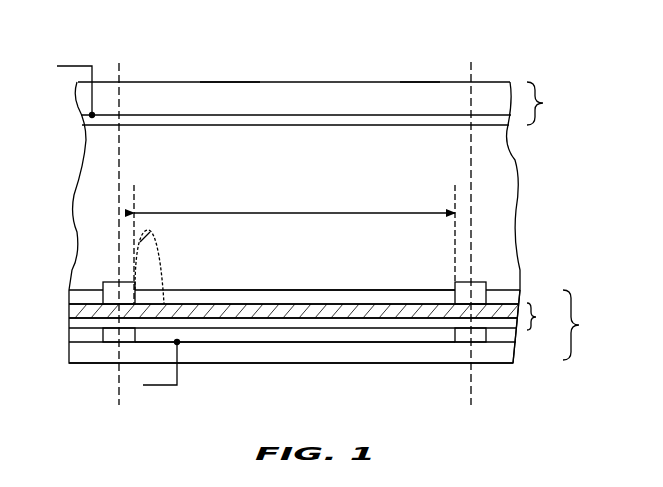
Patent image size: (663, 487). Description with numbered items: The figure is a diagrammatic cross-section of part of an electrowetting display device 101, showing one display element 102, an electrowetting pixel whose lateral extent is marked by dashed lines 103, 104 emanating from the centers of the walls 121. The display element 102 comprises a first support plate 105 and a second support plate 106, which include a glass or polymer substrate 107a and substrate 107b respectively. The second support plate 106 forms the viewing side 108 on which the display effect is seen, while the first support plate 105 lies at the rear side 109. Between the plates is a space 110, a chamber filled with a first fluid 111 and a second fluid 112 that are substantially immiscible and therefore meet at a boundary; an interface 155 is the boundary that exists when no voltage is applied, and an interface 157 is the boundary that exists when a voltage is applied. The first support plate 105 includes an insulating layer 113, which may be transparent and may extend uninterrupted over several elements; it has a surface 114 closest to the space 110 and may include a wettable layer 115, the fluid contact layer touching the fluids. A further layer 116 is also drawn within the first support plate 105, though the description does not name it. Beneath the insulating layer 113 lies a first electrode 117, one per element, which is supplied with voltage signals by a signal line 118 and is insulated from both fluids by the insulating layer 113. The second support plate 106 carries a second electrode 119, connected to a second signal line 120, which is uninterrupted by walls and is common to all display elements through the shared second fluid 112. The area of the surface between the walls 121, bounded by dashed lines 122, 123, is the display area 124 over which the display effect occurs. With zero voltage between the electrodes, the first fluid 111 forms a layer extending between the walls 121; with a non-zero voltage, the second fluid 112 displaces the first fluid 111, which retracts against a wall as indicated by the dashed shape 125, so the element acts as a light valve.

The electrowetting display device 101 is at (590, 60).
The display element 102 is at (305, 52).
The dashed line 103 is at (120, 68).
The dashed line 104 is at (472, 70).
The first support plate 105 is at (347, 325).
The second support plate 106 is at (333, 103).
The substrate 107a is at (493, 355).
The substrate 107b is at (422, 95).
The viewing side 108 is at (203, 80).
The rear side 109 is at (257, 363).
The space 110 is at (356, 135).
The first fluid 111 is at (421, 300).
The second fluid 112 is at (512, 193).
The insulating layer 113 is at (536, 317).
The surface 114 is at (333, 305).
The wettable layer 115 is at (290, 310).
The planarization layer 116 is at (247, 318).
The first electrode 117 is at (358, 335).
The signal line 118 is at (162, 386).
The second electrode 119 is at (103, 113).
The second signal line 120 is at (72, 63).
The walls 121 is at (103, 283).
The dashed line 122 is at (453, 188).
The dashed line 123 is at (137, 186).
The display area 124 is at (294, 198).
The dashed shape 125 is at (141, 242).
The interface 155 is at (380, 290).
The interface 157 is at (166, 259).